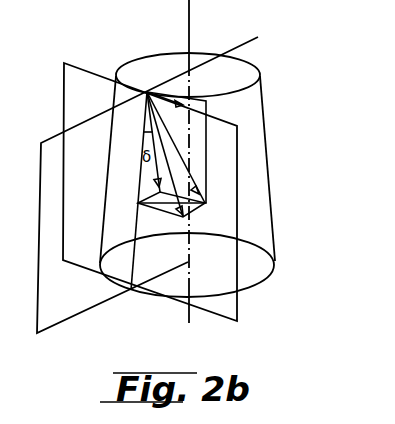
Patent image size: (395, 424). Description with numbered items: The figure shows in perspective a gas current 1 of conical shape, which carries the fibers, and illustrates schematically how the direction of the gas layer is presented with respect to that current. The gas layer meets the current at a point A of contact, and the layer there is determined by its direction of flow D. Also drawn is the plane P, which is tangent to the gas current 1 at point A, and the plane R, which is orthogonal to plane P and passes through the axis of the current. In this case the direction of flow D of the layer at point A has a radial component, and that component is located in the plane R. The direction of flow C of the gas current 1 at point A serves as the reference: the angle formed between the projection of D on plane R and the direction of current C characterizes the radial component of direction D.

The gas current 1 is at (268, 126).
The plane P is at (150, 192).
The plane R is at (147, 185).
The point A is at (168, 176).
The direction of flow C is at (161, 202).
The direction of flow D is at (185, 157).